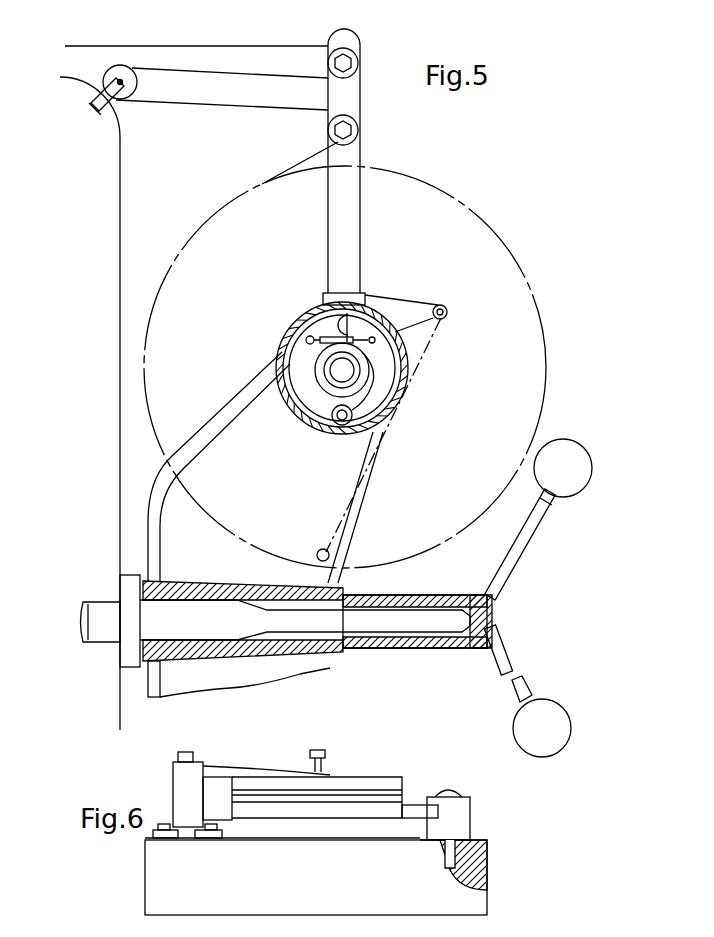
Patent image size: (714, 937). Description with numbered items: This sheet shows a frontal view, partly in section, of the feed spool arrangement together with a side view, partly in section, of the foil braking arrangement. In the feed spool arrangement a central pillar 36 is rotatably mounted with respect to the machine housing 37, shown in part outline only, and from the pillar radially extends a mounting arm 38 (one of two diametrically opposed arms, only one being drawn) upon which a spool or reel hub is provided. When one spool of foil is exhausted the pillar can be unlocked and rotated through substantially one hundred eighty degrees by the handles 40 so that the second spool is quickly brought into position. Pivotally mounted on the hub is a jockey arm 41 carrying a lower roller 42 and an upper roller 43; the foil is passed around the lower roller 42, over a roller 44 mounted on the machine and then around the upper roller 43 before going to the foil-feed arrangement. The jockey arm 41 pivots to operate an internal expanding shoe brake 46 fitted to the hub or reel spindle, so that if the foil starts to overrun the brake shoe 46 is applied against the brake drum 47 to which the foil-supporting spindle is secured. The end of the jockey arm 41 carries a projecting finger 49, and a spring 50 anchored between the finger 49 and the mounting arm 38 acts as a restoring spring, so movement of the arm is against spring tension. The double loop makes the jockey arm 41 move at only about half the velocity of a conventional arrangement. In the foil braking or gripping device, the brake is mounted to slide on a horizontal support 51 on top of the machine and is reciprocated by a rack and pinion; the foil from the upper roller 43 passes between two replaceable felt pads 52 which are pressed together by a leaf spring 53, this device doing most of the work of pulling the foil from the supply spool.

In FIG. 5, the central pillar 36 is at (148, 662).
In FIG. 5, the machine housing 37 is at (120, 188).
In FIG. 5, the mounting arm 38 is at (336, 582).
In FIG. 5, the handle 40 is at (530, 525).
In FIG. 5, the jockey arm 41 is at (360, 258).
In FIG. 5, the lower roller 42 is at (358, 132).
In FIG. 5, the upper roller 43 is at (358, 65).
In FIG. 5, the roller 44 is at (126, 92).
In FIG. 5, the internal expanding shoe brake 46 is at (396, 384).
In FIG. 5, the brake drum 47 is at (400, 308).
In FIG. 5, the projecting finger 49 is at (440, 304).
In FIG. 5, the spring 50 is at (428, 345).
In FIG. 6, the horizontal support 51 is at (415, 805).
In FIG. 6, the felt pads 52 is at (380, 790).
In FIG. 6, the leaf spring 53 is at (250, 770).